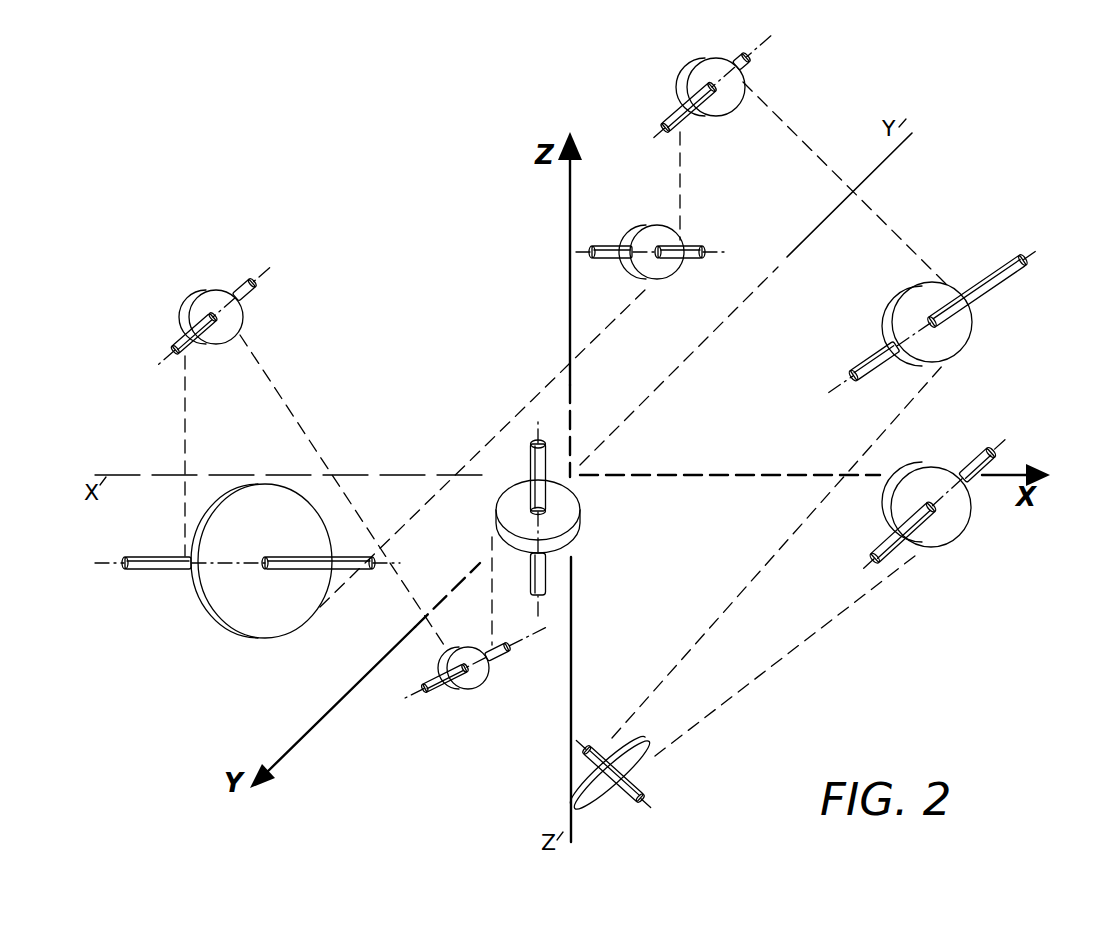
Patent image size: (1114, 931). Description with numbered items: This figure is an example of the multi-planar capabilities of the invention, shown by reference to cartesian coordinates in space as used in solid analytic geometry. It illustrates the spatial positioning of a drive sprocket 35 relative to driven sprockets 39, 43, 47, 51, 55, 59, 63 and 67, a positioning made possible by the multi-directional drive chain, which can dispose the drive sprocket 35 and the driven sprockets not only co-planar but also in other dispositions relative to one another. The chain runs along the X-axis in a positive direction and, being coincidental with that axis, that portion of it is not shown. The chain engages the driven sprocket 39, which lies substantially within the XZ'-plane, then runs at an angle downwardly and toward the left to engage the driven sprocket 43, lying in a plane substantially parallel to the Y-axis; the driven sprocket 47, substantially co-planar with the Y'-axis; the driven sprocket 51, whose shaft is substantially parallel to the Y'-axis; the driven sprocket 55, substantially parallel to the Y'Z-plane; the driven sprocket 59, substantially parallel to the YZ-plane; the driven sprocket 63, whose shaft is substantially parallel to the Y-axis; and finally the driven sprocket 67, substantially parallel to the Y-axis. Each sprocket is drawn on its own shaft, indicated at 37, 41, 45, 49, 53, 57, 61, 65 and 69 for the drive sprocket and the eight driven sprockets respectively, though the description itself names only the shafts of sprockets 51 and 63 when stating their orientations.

The drive sprocket 35 is at (577, 520).
The center disk shaft 37 is at (574, 497).
The driven sprocket 39 is at (900, 503).
The x-axis disk shaft 41 is at (988, 457).
The driven sprocket 43 is at (640, 758).
The lower disk shaft 45 is at (645, 793).
The driven sprocket 47 is at (957, 340).
The upper right disk shaft 49 is at (1007, 285).
The driven sprocket 51 is at (697, 73).
The top disk shaft 53 is at (690, 117).
The driven sprocket 55 is at (660, 273).
The upper center disk shaft 57 is at (697, 242).
The driven sprocket 59 is at (277, 613).
The left disk shaft 61 is at (142, 572).
The driven sprocket 63 is at (195, 310).
The upper left disk shaft 65 is at (178, 340).
The driven sprocket 67 is at (485, 675).
The lower left disk shaft 69 is at (442, 690).